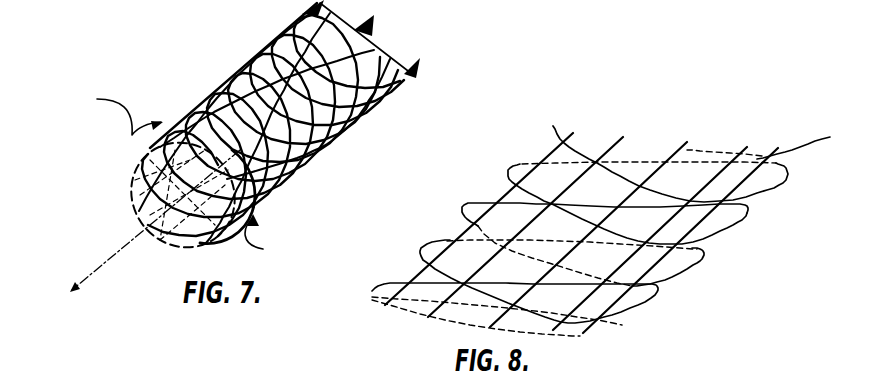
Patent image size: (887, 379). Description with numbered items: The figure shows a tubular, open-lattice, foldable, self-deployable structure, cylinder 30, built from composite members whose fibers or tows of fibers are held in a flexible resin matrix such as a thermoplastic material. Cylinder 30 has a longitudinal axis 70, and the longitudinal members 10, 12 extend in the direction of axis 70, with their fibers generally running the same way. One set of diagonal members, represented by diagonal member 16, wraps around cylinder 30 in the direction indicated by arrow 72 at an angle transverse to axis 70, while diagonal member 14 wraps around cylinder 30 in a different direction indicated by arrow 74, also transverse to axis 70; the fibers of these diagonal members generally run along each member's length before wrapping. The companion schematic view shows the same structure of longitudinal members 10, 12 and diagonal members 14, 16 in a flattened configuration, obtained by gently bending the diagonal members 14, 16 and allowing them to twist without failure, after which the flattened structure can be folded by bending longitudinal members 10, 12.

In FIG. 7, the longitudinal member 10 is at (234, 134).
In FIG. 8, the longitudinal member 10 is at (534, 227).
In FIG. 7, the longitudinal member 12 is at (307, 165).
In FIG. 8, the longitudinal member 12 is at (655, 281).
In FIG. 7, the diagonal member 14 is at (291, 188).
In FIG. 8, the diagonal member 14 is at (633, 220).
In FIG. 7, the diagonal member 16 is at (257, 63).
In FIG. 8, the diagonal member 16 is at (585, 205).
In FIG. 7, the cylinder 30 is at (128, 143).
In FIG. 7, the longitudinal axis 70 is at (117, 252).
In FIG. 7, the arrow 72 is at (117, 109).
In FIG. 7, the arrow 74 is at (267, 245).